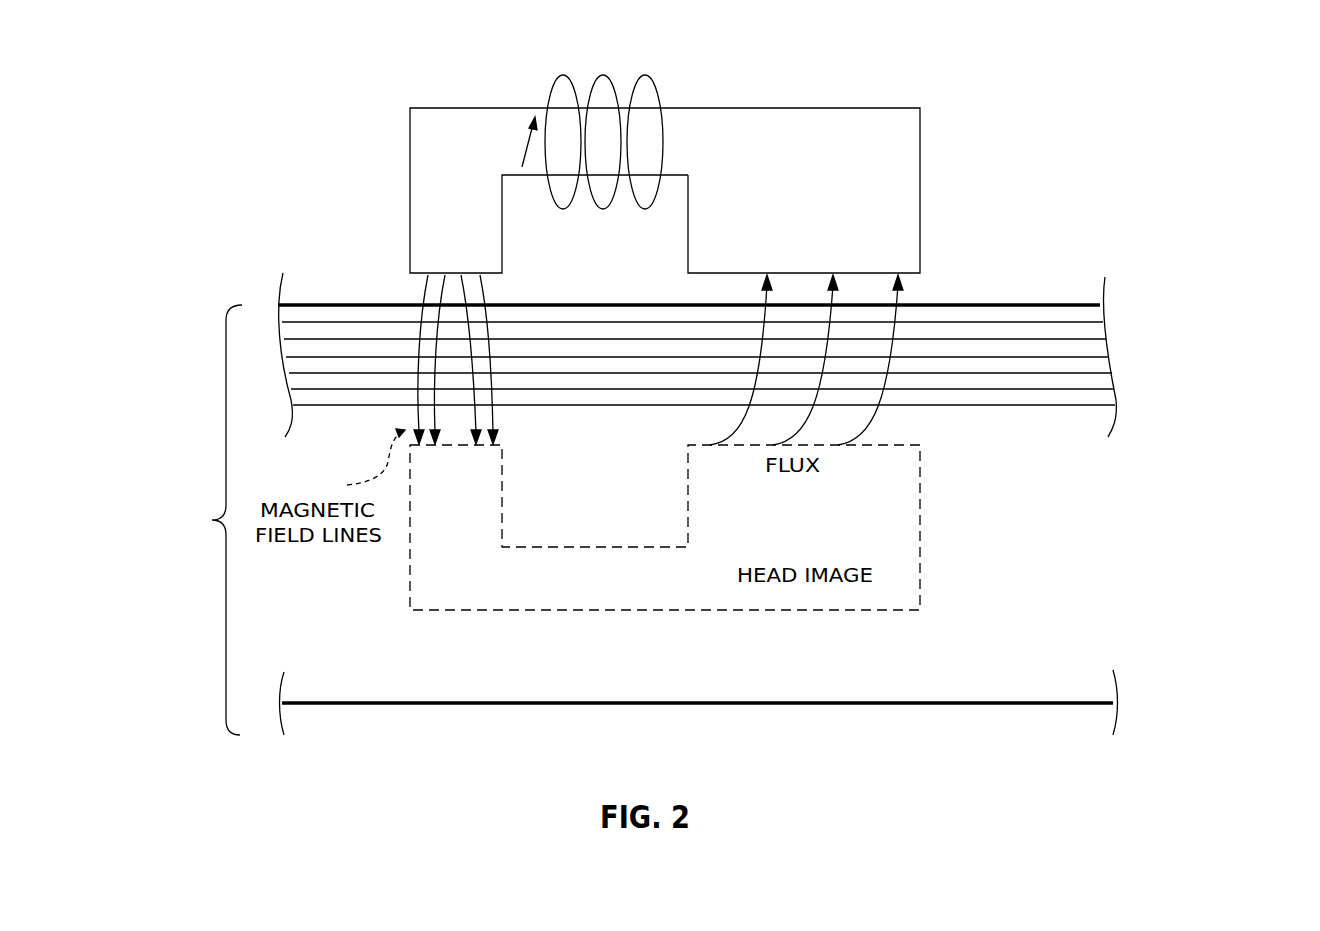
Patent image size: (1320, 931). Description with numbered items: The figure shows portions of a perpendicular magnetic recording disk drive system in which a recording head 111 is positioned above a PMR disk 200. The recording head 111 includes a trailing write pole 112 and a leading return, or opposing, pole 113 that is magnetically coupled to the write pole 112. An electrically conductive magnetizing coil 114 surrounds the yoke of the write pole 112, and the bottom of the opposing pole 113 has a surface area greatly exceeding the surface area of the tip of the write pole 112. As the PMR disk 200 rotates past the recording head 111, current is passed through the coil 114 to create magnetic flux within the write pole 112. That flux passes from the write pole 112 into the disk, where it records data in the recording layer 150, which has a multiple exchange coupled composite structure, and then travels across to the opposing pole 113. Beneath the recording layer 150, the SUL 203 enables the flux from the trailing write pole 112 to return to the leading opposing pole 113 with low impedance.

The recording head 111 is at (826, 152).
The write pole 112 is at (410, 246).
The opposing pole 113 is at (892, 262).
The magnetizing coil 114 is at (587, 121).
The recording layer 150 is at (1130, 405).
The PMR disk 200 is at (205, 520).
The SUL 203 is at (1065, 681).